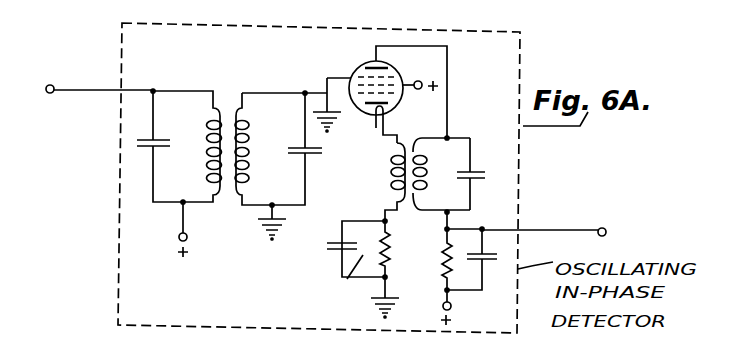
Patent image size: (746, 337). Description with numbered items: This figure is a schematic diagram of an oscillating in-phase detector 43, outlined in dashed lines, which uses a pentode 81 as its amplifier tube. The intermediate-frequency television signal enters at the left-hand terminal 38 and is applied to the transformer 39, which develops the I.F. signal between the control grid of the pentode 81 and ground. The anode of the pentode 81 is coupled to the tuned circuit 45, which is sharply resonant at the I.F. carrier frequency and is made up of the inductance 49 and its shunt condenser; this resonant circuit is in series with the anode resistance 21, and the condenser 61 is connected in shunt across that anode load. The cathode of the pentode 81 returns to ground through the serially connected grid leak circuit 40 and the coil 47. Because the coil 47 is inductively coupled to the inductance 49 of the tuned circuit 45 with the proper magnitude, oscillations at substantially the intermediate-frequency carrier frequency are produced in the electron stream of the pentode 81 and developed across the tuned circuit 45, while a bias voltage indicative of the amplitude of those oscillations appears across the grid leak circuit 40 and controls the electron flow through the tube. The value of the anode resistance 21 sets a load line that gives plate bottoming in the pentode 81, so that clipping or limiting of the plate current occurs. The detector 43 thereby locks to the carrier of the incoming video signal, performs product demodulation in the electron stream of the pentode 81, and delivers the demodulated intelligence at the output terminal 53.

The input terminal 38 is at (50, 85).
The transformer 39 is at (215, 81).
The oscillating in-phase detector 43 is at (118, 178).
The pentode 81 is at (362, 62).
The inductance 49 is at (414, 137).
The coil 47 is at (391, 174).
The tuned circuit 45 is at (436, 165).
The grid leak circuit 40 is at (363, 268).
The anode resistance 21 is at (437, 255).
The condenser 61 is at (487, 262).
The output terminal 53 is at (605, 229).